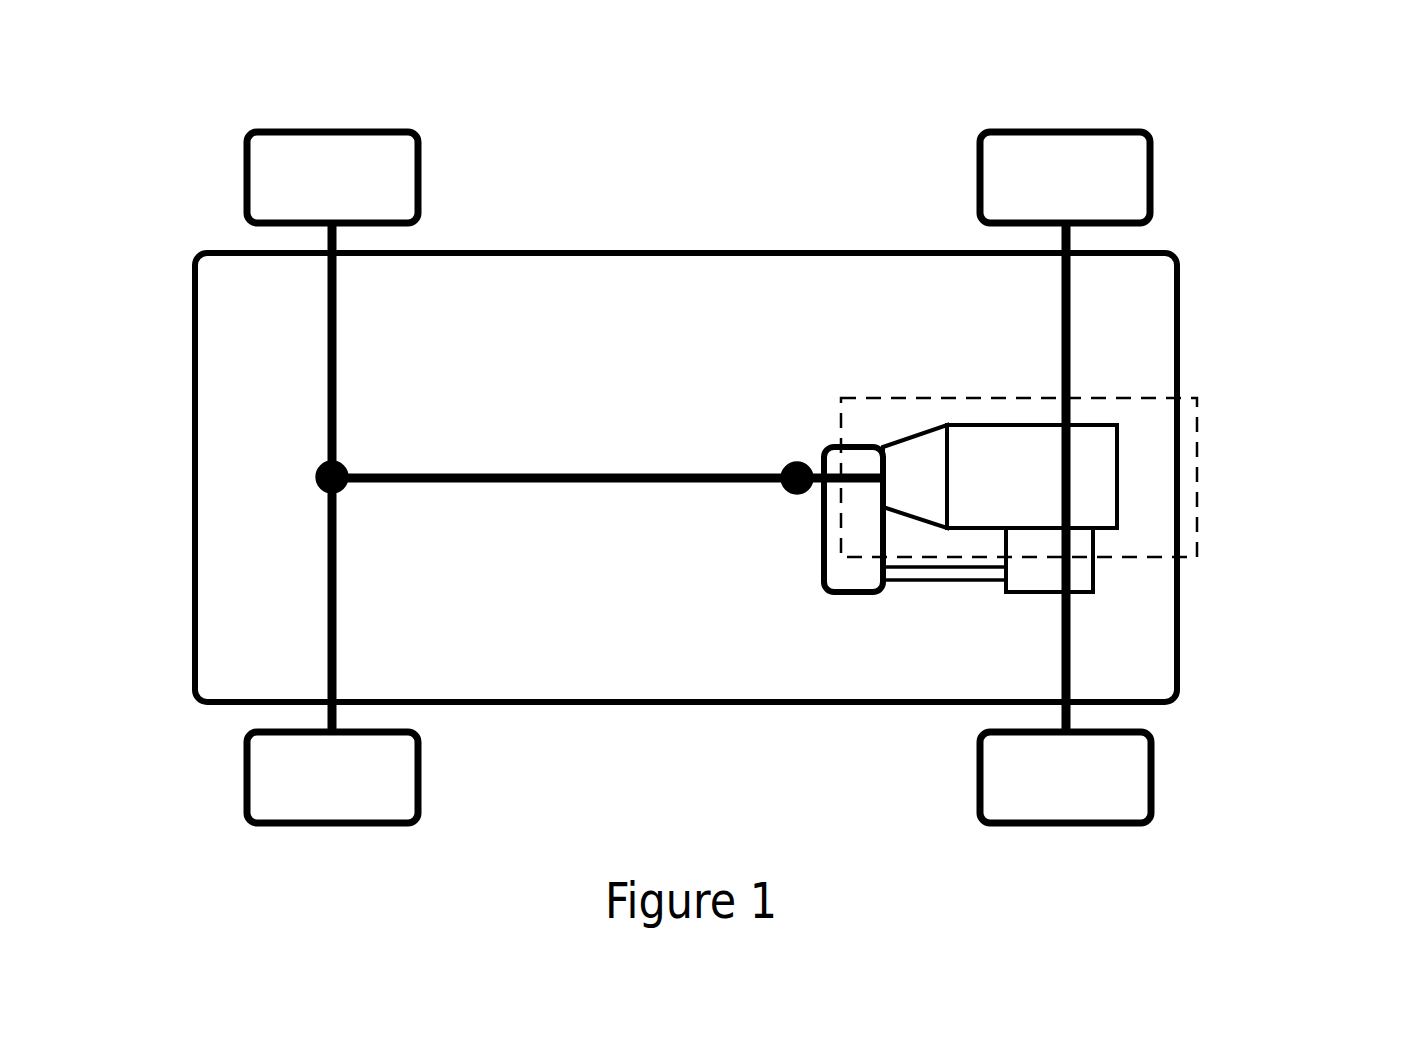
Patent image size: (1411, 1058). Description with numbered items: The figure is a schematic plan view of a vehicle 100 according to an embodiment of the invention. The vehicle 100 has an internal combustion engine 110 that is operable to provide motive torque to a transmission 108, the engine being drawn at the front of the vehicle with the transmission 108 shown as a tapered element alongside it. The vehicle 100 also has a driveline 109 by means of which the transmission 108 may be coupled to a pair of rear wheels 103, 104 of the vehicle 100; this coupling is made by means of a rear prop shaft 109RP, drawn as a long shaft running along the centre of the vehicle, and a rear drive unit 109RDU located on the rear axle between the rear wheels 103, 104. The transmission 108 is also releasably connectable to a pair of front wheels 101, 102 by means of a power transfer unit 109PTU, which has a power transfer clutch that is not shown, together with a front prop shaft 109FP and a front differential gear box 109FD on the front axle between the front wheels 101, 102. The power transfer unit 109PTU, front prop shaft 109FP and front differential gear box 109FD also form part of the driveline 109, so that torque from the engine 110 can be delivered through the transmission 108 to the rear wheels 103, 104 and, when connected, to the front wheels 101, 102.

The vehicle 100 is at (1290, 133).
The front wheel 101 is at (1133, 190).
The front wheel 102 is at (1134, 777).
The rear wheel 103 is at (270, 190).
The rear wheel 104 is at (270, 777).
The transmission 108 is at (898, 442).
The driveline 109 is at (695, 617).
The rear drive unit 109RDU is at (327, 470).
The rear prop shaft 109RP is at (627, 481).
The power transfer unit 109PTU is at (855, 573).
The front prop shaft 109FP is at (958, 579).
The front differential gear box 109FD is at (1090, 579).
The internal combustion engine 110 is at (1092, 470).